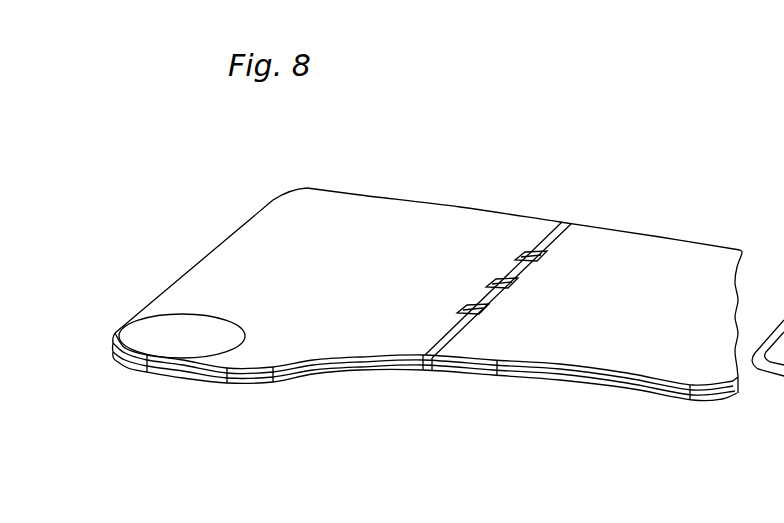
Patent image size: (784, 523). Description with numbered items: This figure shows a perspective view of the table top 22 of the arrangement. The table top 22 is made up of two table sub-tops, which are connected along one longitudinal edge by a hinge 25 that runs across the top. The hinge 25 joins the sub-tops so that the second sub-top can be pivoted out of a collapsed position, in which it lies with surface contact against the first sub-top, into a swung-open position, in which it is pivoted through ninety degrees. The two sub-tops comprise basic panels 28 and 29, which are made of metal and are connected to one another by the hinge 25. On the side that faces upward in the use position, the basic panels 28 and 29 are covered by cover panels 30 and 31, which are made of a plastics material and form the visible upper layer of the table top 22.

The table top 22 is at (481, 126).
The hinge 25 is at (548, 235).
The basic panel 28 is at (256, 385).
The basic panel 29 is at (572, 378).
The cover panel 30 is at (325, 370).
The cover panel 31 is at (497, 370).